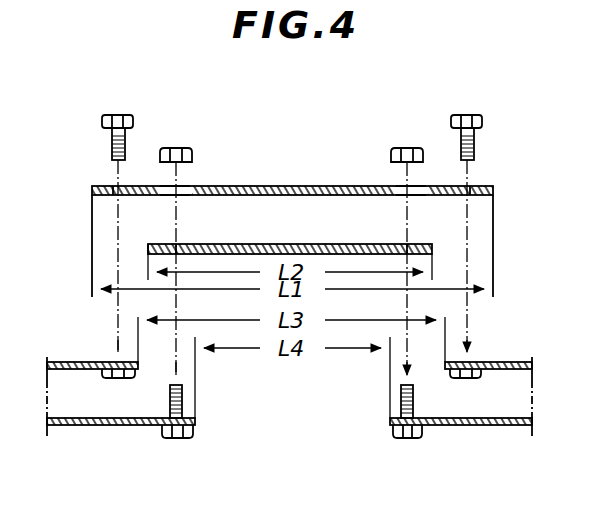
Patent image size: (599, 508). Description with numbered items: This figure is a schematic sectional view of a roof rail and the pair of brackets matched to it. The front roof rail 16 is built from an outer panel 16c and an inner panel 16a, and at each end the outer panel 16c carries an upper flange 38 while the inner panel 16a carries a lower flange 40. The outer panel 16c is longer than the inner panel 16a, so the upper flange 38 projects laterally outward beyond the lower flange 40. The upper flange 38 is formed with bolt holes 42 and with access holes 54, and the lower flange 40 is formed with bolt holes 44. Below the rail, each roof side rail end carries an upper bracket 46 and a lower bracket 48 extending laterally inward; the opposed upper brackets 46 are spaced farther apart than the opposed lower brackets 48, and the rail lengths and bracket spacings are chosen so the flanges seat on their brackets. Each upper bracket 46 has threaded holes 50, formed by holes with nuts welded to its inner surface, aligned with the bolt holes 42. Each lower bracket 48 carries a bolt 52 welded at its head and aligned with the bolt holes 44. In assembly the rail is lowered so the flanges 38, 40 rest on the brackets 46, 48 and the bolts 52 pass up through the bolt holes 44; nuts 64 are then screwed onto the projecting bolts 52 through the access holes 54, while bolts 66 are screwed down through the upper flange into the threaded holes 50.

The front roof rail 16 is at (262, 176).
The inner panel of front roof rail 16a is at (277, 244).
The outer panel of front roof rail 16c is at (302, 185).
The upper flange 38 is at (92, 188).
The lower flange 40 is at (148, 245).
The bolt hole 42 is at (113, 186).
The bolt hole 44 is at (182, 245).
The first upper bracket 46 is at (289, 393).
The first lower bracket 48 is at (72, 426).
The threaded hole 50 is at (90, 362).
The bolt 52 is at (165, 432).
The access hole 54 is at (190, 186).
The nut 64 is at (176, 147).
The bolt 66 is at (118, 114).